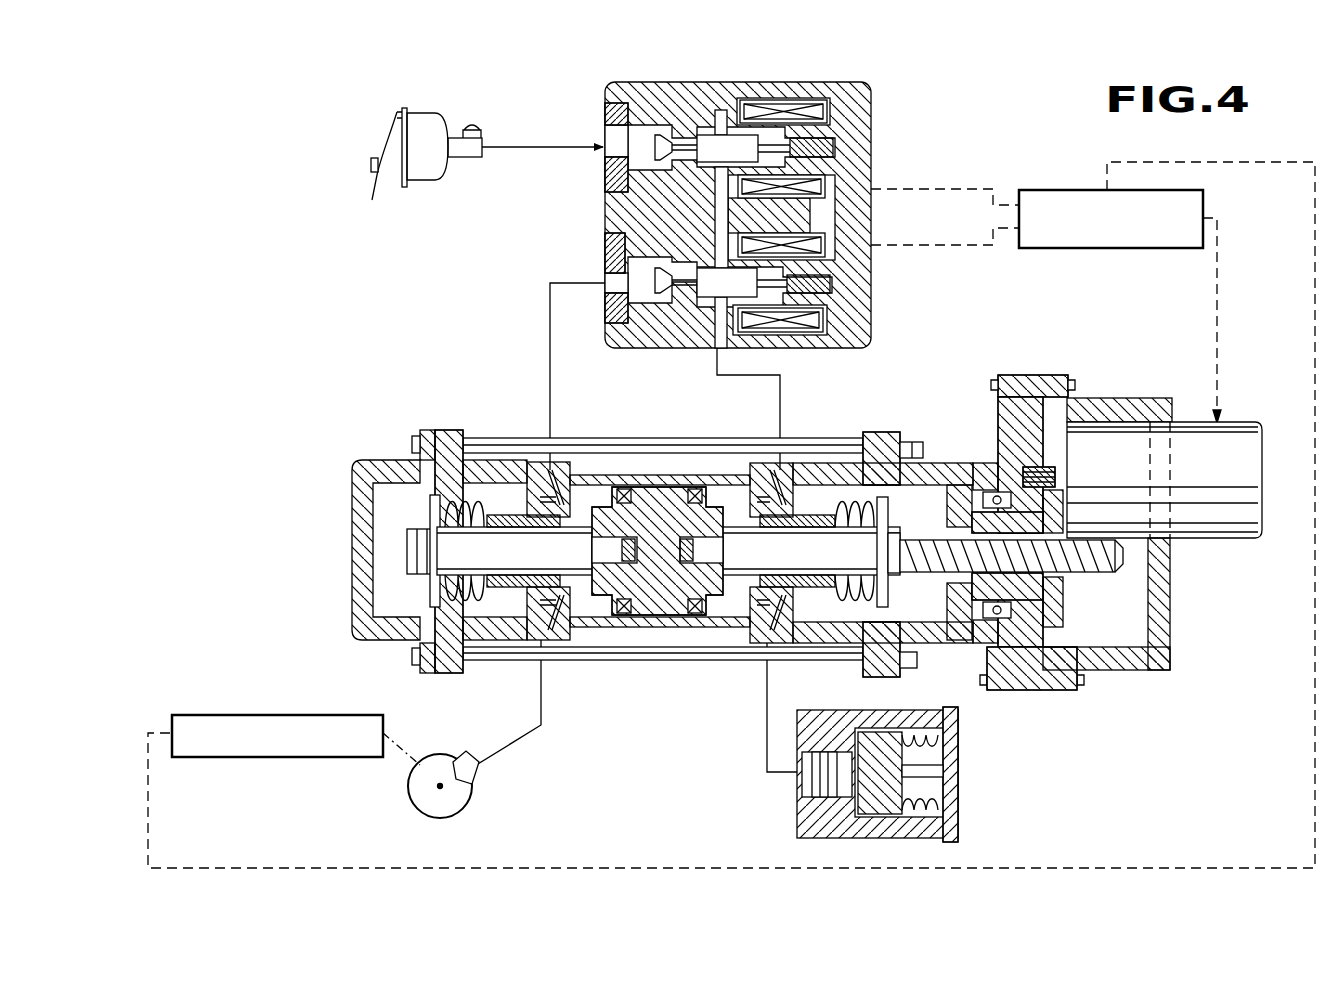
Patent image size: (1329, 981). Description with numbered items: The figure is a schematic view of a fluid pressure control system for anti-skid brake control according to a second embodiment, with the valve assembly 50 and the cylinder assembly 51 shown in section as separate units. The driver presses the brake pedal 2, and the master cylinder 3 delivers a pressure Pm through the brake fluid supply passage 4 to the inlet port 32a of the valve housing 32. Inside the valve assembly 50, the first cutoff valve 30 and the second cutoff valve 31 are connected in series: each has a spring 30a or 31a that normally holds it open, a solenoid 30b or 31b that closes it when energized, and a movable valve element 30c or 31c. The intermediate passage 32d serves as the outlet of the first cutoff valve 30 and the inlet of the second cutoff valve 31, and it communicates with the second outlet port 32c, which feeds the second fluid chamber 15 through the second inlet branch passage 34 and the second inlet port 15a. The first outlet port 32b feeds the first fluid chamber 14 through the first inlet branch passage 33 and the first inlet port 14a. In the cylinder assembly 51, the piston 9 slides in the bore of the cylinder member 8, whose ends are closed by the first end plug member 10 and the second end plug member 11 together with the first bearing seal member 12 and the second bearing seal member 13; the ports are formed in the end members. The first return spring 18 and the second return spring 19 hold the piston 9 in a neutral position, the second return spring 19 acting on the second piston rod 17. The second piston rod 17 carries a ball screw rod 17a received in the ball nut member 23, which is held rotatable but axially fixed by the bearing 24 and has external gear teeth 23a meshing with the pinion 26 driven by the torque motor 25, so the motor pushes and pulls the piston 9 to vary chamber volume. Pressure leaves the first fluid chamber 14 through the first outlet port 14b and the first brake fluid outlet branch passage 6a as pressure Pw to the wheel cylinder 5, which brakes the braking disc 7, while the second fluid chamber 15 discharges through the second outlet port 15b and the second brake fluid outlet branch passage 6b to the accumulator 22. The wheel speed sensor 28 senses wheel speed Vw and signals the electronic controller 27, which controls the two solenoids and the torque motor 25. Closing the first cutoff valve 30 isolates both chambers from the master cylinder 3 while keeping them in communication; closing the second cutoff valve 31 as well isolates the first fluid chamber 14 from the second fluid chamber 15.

The brake pedal 2 is at (377, 180).
The master cylinder 3 is at (466, 158).
The brake fluid supply passage 4 is at (541, 146).
The wheel cylinder 5 is at (474, 777).
The first brake fluid outlet branch passage 6a is at (542, 720).
The second brake fluid outlet branch passage 6b is at (767, 772).
The braking disc 7 is at (413, 805).
The cylinder member 8 is at (646, 627).
The piston 9 is at (672, 618).
The first end plug member 10 is at (545, 645).
The second end plug member 11 is at (750, 626).
The first bearing seal member 12 is at (492, 604).
The second bearing seal member 13 is at (812, 604).
The first fluid chamber 14 is at (553, 565).
The first inlet port 14a is at (550, 468).
The first outlet port 14b is at (562, 626).
The second fluid chamber 15 is at (711, 578).
The second inlet port 15a is at (776, 476).
The second outlet port 15b is at (765, 700).
The second piston rod 17 is at (1005, 589).
The ball screw rod 17a is at (1082, 574).
The first return spring 18 is at (438, 606).
The second return spring 19 is at (853, 606).
The accumulator 22 is at (797, 800).
The ball nut member 23 is at (1152, 660).
The external gear teeth 23a is at (1030, 690).
The bearing 24 is at (1006, 564).
The torque motor 25 is at (1212, 540).
The pinion 26 is at (1038, 468).
The electronic controller 27 is at (1103, 250).
The wheel speed sensor 28 is at (276, 715).
The first cutoff valve 30 is at (827, 129).
The spring 30a is at (836, 149).
The solenoid 30b is at (838, 113).
The movable valve element 30c is at (727, 140).
The second cutoff valve 31 is at (813, 317).
The spring 31a is at (834, 284).
The solenoid 31b is at (832, 320).
The movable valve element 31c is at (710, 292).
The valve housing 32 is at (677, 247).
The inlet port 32a is at (614, 135).
The first outlet port 32b is at (604, 292).
The second outlet port 32c is at (718, 352).
The intermediate passage 32d is at (705, 202).
The first inlet branch passage 33 is at (547, 330).
The second inlet branch passage 34 is at (782, 380).
The valve assembly 50 is at (711, 244).
The cylinder assembly 51 is at (496, 438).